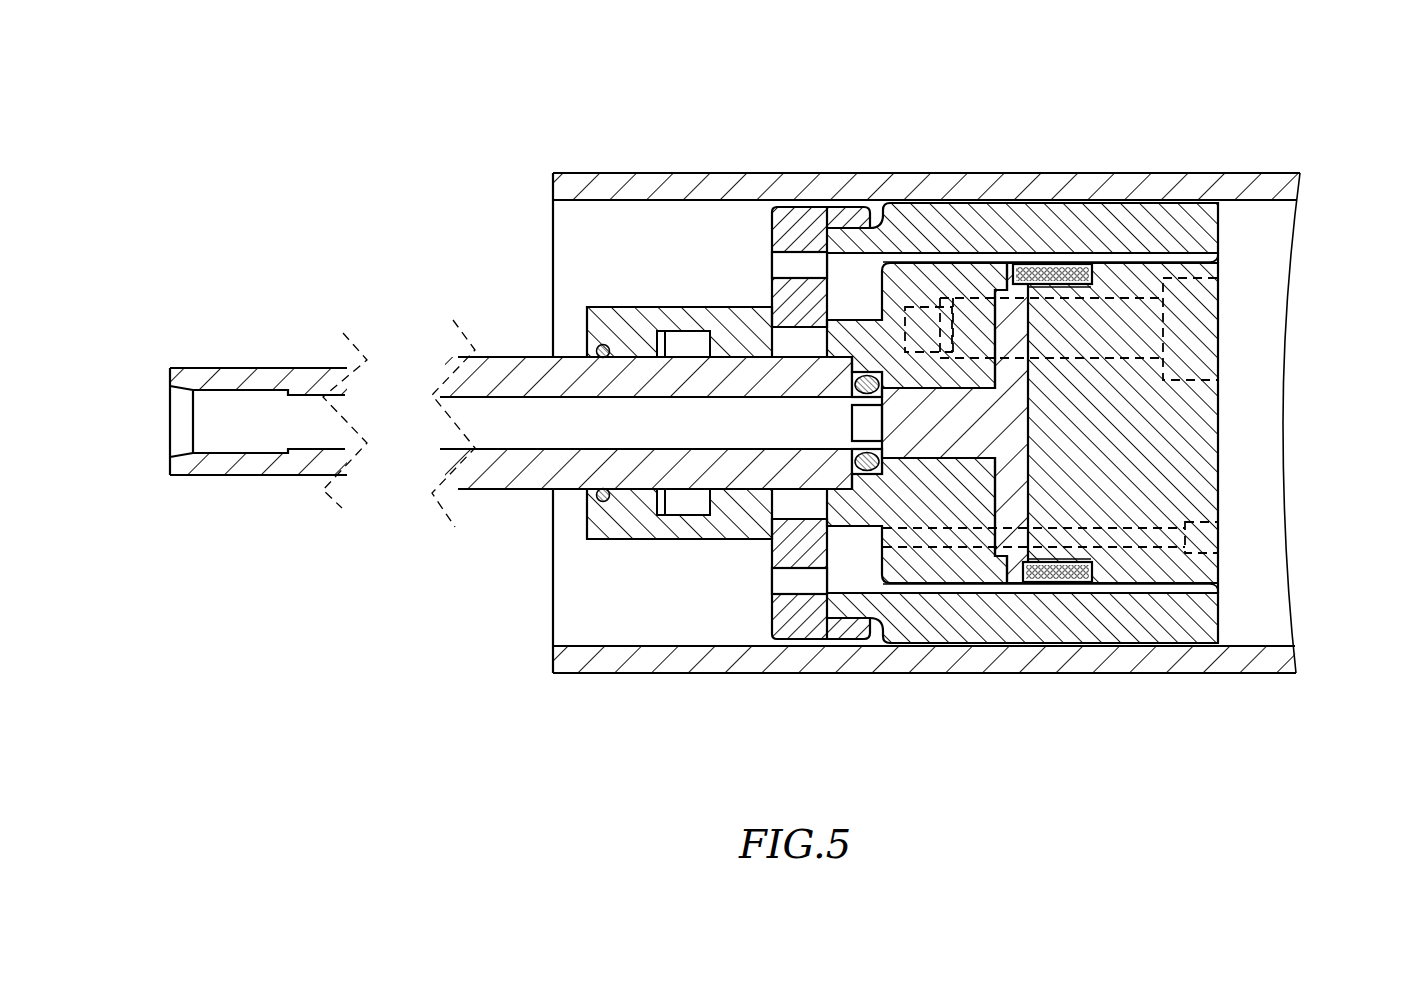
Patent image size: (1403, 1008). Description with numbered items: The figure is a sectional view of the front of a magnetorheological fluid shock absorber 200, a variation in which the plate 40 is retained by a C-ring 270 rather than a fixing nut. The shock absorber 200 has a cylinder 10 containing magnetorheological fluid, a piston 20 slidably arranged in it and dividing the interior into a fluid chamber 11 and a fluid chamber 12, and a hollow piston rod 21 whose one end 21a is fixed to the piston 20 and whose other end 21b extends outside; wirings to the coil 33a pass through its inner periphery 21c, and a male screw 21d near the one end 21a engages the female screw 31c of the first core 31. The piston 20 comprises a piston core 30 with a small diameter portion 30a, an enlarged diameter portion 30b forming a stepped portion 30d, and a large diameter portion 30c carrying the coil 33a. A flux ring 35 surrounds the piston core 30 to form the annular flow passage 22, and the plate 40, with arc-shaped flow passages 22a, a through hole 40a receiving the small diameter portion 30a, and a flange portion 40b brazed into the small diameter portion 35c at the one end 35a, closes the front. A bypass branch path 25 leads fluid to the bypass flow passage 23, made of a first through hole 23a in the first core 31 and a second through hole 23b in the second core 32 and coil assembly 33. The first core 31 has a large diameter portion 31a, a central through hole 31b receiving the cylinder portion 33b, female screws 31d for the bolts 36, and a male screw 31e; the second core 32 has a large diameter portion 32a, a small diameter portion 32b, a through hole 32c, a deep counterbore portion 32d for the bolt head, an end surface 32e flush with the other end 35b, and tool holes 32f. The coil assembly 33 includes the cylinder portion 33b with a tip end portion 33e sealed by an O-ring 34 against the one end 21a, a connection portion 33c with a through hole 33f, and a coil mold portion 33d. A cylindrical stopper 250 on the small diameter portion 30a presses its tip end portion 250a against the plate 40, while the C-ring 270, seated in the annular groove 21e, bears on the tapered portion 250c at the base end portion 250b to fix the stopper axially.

The shock absorber 200 is at (1332, 152).
The cylinder 10 is at (549, 169).
The fluid chamber 11 is at (585, 240).
The fluid chamber 12 is at (1262, 233).
The piston 20 is at (1175, 196).
The piston rod 21 is at (255, 365).
The one end 21a is at (862, 478).
The other end 21b is at (210, 470).
The inner periphery 21c is at (513, 448).
The male screw 21d is at (662, 541).
The annular groove 21e is at (598, 500).
The flow passage 22 is at (930, 256).
The flow passage 22a is at (777, 197).
The bypass flow passage 23 is at (900, 547).
The first through hole 23a is at (990, 535).
The second through hole 23b is at (1120, 547).
The bypass branch path 25 is at (866, 476).
The piston core 30 is at (1125, 250).
The small diameter portion 30a is at (775, 539).
The enlarged diameter portion 30b is at (800, 600).
The large diameter portion 30c is at (1078, 262).
The stepped portion 30d is at (768, 320).
The first core 31 is at (977, 533).
The large diameter portion 31a is at (950, 500).
The through hole 31b is at (965, 395).
The female screw 31c is at (712, 516).
The female screw 31d is at (977, 302).
The male screw 31e is at (709, 481).
The second core 32 is at (1195, 590).
The large diameter portion 32a is at (1157, 600).
The small diameter portion 32b is at (1147, 587).
The through hole 32c is at (1220, 320).
The deep counterbore portion 32d is at (1222, 285).
The end surface 32e is at (1220, 478).
The tool hole 32f is at (1220, 532).
The coil assembly 33 is at (1088, 266).
The coil 33a is at (1055, 582).
The cylinder portion 33b is at (920, 440).
The connection portion 33c is at (1010, 512).
The coil mold portion 33d is at (1077, 582).
The tip end portion 33e is at (872, 615).
The through hole 33f is at (1008, 262).
The O-ring 34 is at (903, 305).
The flux ring 35 is at (1042, 232).
The one end 35a is at (845, 240).
The other end 35b is at (1228, 232).
The small diameter portion 35c is at (842, 218).
The bolt 36 is at (1220, 348).
The plate 40 is at (795, 255).
The through hole 40a is at (765, 305).
The flange portion 40b is at (855, 290).
The stopper 250 is at (666, 301).
The tip end portion 250a is at (735, 305).
The base end portion 250b is at (592, 325).
The tapered portion 250c is at (598, 346).
The C-ring 270 is at (586, 335).